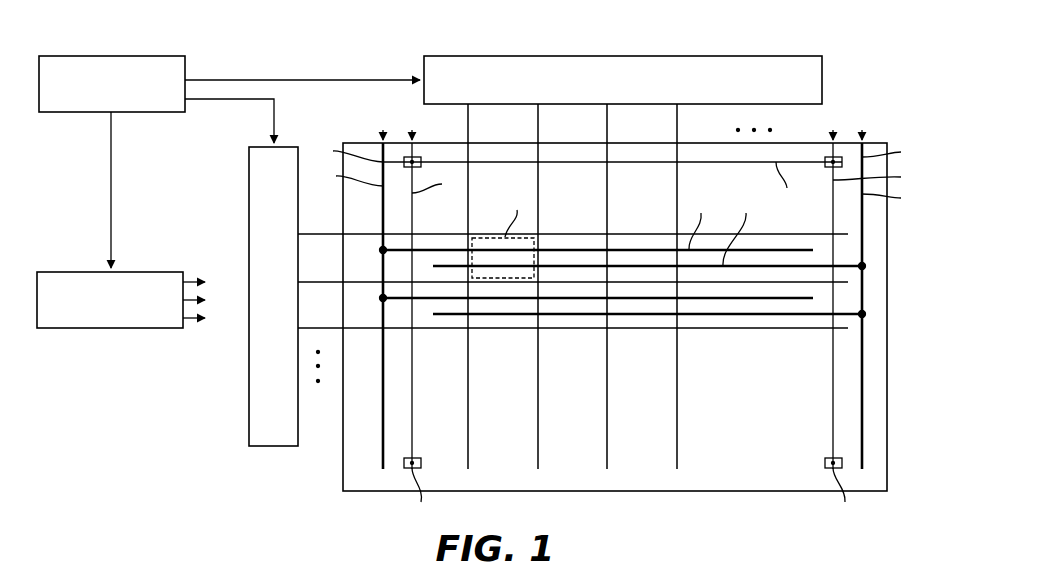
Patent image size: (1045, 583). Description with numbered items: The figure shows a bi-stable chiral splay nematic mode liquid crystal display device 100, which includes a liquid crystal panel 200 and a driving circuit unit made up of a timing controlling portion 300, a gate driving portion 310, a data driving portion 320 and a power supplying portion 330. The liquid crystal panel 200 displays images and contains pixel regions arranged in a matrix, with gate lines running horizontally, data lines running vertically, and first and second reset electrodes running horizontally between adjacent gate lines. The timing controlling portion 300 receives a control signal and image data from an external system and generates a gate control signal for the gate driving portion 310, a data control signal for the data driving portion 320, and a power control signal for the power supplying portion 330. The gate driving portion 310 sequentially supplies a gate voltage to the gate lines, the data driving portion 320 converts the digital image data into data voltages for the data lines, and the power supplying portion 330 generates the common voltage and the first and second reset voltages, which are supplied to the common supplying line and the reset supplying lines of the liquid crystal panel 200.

The liquid crystal display device 100 is at (606, 29).
The liquid crystal panel 200 is at (887, 370).
The timing controlling portion 300 is at (148, 55).
The gate driving portion 310 is at (249, 410).
The data driving portion 320 is at (822, 80).
The power supplying portion 330 is at (110, 328).